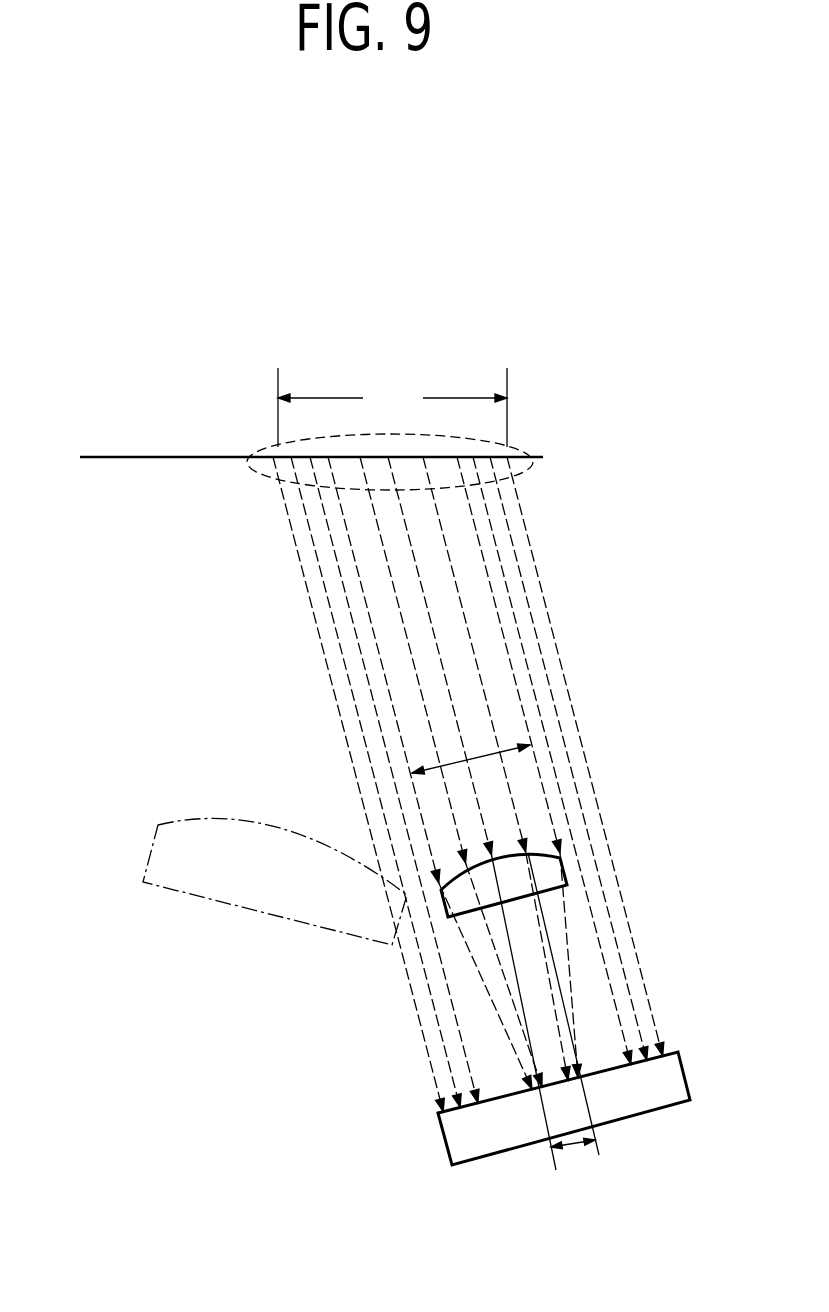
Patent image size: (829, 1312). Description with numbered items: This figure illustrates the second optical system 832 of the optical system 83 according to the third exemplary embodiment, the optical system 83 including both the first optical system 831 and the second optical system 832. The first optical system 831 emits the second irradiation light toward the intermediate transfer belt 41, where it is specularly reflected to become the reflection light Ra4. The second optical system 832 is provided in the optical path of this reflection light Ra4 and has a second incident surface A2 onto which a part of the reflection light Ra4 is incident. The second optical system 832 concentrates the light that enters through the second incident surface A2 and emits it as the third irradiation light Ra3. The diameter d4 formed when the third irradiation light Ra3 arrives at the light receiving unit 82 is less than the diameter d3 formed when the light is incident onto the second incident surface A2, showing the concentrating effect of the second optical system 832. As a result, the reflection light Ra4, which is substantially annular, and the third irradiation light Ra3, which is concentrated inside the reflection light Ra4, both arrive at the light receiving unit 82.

The intermediate transfer belt 41 is at (139, 458).
The light receiving unit 82 is at (681, 1056).
The optical system 83 is at (355, 946).
The first optical system 831 is at (303, 925).
The second optical system 832 is at (463, 905).
The third irradiation light Ra3 is at (552, 980).
The reflection light Ra4 is at (585, 749).
The second incident surface A2 is at (535, 857).
The diameter d3 is at (488, 753).
The diameter d4 is at (570, 1145).